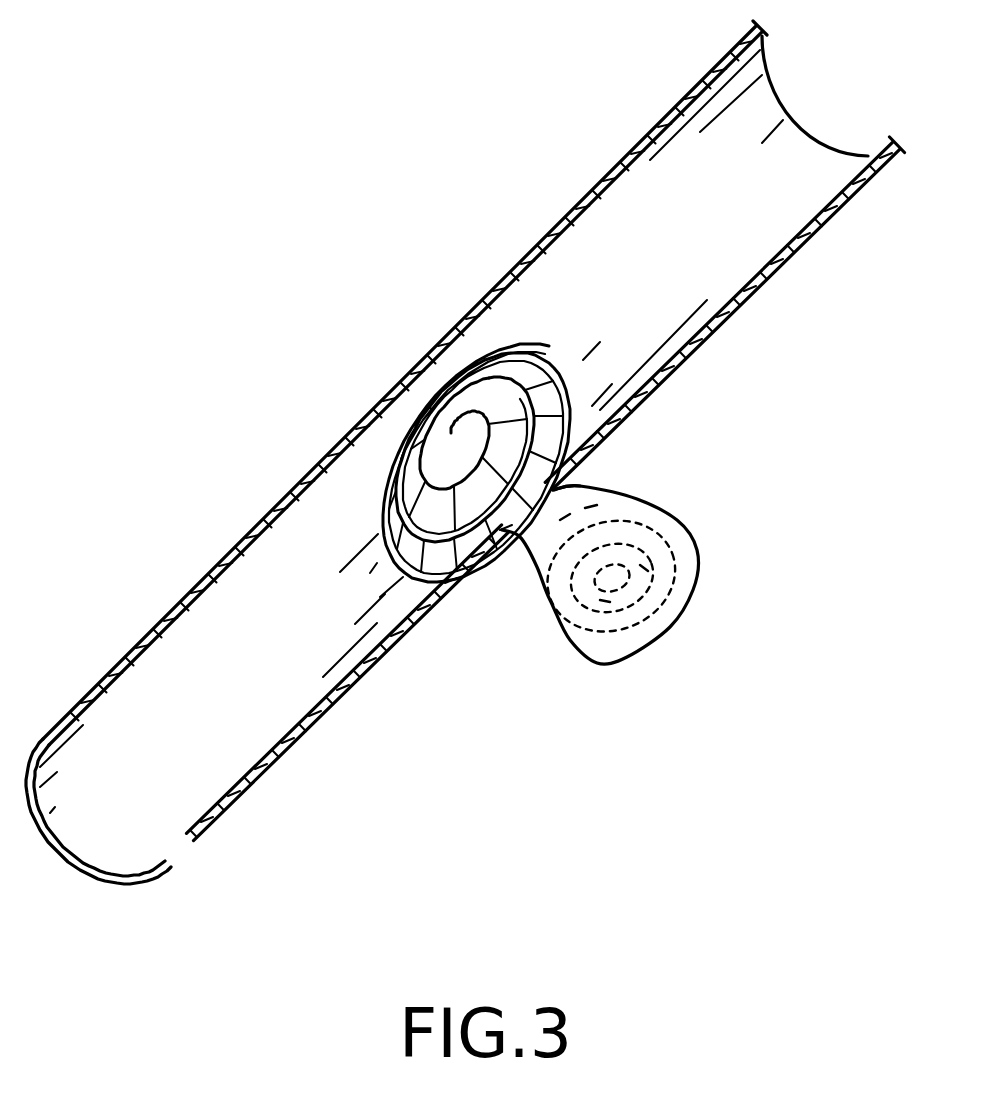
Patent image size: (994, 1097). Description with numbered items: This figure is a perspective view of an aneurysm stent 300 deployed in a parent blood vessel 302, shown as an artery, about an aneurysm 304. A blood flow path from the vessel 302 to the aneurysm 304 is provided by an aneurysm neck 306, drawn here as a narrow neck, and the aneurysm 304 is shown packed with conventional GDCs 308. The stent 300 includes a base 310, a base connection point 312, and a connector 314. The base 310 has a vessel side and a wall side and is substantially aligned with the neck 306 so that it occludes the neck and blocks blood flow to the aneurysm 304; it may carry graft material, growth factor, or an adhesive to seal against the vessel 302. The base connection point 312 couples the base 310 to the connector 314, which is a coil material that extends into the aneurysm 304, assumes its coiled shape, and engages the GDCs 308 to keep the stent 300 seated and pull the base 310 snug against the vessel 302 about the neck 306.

The aneurysm stent 300 is at (398, 192).
The parent blood vessel 302 is at (688, 347).
The aneurysm 304 is at (698, 552).
The aneurysm neck 306 is at (577, 485).
The GDCs 308 is at (657, 600).
The base 310 is at (493, 367).
The base connection point 312 is at (460, 433).
The connector 314 is at (513, 497).